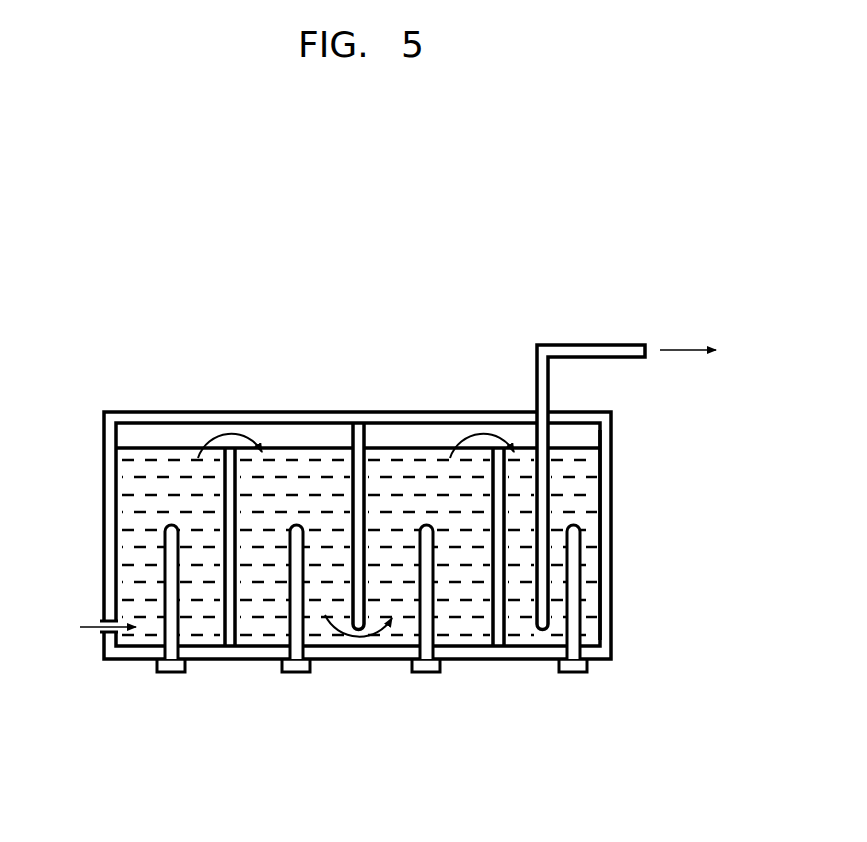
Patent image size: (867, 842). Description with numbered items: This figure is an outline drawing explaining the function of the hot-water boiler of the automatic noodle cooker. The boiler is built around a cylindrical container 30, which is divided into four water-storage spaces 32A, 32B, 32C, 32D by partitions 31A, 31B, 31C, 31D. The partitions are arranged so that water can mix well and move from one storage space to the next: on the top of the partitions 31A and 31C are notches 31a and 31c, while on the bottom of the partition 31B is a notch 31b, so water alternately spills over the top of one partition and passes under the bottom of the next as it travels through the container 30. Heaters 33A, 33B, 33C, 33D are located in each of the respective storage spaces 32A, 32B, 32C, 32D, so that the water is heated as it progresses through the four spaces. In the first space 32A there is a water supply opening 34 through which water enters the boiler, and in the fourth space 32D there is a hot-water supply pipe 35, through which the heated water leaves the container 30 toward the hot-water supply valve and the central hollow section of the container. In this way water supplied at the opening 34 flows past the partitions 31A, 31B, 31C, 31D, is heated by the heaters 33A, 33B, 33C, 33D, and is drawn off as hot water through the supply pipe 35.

The cylindrical container 30 is at (103, 462).
The notch 31a is at (231, 446).
The partition 31A is at (222, 622).
The notch 31b is at (378, 638).
The partition 31B is at (354, 592).
The notch 31c is at (490, 447).
The partition 31C is at (543, 626).
The partition 31D is at (603, 602).
The first water-storage space 32A is at (160, 497).
The second water-storage space 32B is at (317, 477).
The third water-storage space 32C is at (405, 487).
The fourth water-storage space 32D is at (585, 492).
The heater 33A is at (168, 630).
The heater 33B is at (292, 629).
The heater 33C is at (427, 630).
The heater 33D is at (573, 632).
The water supply opening 34 is at (81, 627).
The hot-water supply pipe 35 is at (575, 348).